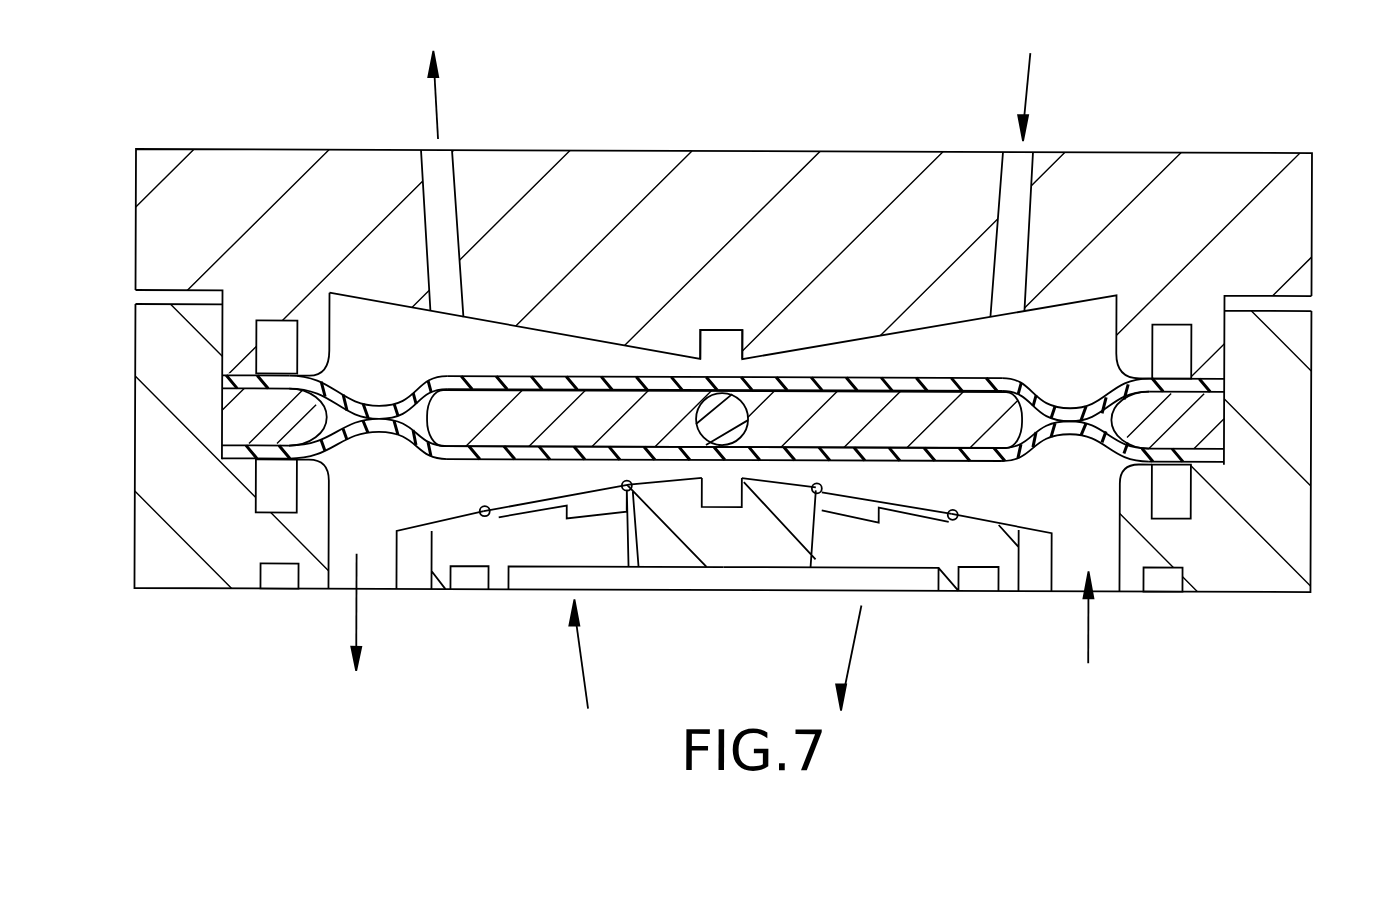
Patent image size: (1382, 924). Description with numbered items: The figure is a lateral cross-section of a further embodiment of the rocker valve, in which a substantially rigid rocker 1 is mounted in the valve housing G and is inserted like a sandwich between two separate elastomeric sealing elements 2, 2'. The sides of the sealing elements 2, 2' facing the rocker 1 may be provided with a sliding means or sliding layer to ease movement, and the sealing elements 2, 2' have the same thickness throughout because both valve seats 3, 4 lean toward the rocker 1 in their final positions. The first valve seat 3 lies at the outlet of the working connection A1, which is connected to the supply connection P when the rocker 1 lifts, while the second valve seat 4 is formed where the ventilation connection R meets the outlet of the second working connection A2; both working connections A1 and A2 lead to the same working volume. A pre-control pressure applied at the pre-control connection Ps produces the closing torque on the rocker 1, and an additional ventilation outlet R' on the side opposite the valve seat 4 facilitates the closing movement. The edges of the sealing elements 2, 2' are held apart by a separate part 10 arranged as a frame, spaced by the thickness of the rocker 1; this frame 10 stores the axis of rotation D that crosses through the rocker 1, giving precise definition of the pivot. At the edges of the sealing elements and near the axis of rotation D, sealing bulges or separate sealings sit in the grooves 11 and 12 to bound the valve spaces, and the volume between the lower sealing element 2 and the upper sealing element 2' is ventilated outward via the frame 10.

The rocker 1 is at (523, 413).
The sealing element 2 is at (719, 450).
The sealing element 2' is at (1075, 377).
The first valve seat 3 is at (958, 514).
The second valve seat 4 is at (505, 523).
The frame 10 is at (263, 415).
The groove 11 is at (275, 340).
The groove 12 is at (725, 340).
The axis of rotation D is at (723, 420).
The valve housing G is at (1278, 225).
The supply connection P is at (1090, 637).
The pre-control connection Ps is at (1027, 80).
The ventilation connection R is at (324, 617).
The additional ventilation outlet R' is at (472, 95).
The working connection A1 is at (857, 643).
The working connection A2 is at (583, 647).